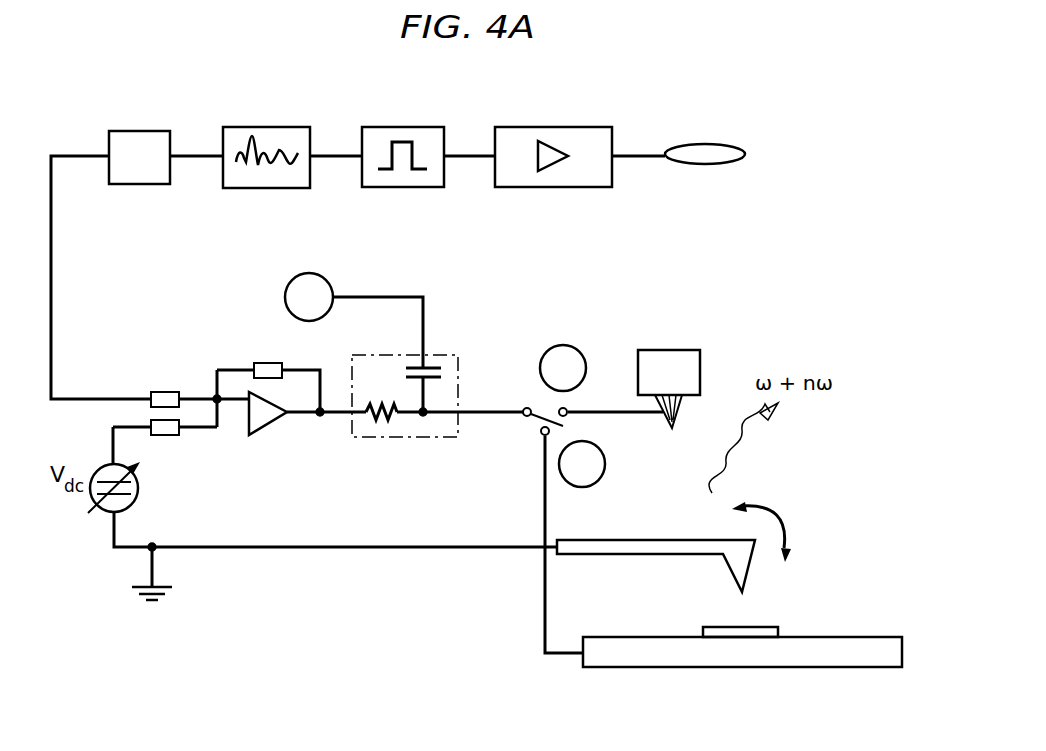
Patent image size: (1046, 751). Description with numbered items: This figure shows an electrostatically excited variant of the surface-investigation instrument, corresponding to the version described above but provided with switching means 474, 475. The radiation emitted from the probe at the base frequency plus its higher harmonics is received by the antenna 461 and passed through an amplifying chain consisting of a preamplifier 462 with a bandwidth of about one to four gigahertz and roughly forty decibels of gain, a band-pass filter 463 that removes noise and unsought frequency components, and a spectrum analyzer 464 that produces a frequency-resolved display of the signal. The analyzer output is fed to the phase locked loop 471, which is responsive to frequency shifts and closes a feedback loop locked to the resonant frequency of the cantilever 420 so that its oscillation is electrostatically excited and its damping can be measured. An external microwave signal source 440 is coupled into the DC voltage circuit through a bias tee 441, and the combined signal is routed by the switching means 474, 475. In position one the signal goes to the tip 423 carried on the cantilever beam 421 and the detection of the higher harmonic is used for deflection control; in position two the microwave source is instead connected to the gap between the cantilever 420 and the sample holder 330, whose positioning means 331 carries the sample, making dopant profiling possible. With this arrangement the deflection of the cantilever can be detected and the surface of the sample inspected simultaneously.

The phase locked loop 471 is at (137, 131).
The spectrum analyzer / signal detector 464 is at (262, 127).
The pulse filter 463 is at (423, 127).
The amplifier 462 is at (590, 127).
The antenna / electrode 461 is at (718, 144).
The AC signal source 440 is at (326, 278).
The coupling network 441 is at (445, 355).
The switching means 474 is at (296, 445).
The switch 475 is at (516, 445).
The probe 423 is at (665, 422).
The cantilever 421 is at (597, 540).
The cantilever 420 is at (768, 582).
The positioning means 331 is at (720, 627).
The sample holder 330 is at (668, 698).